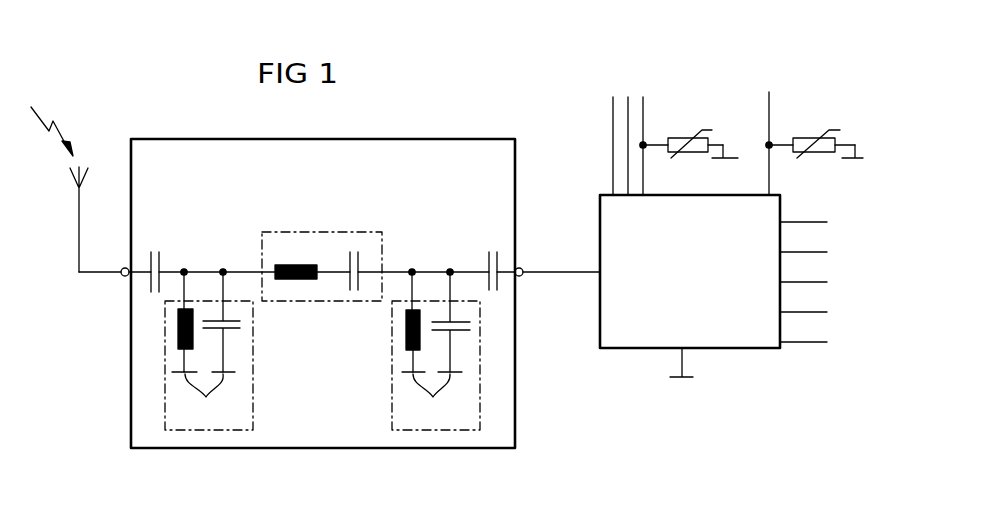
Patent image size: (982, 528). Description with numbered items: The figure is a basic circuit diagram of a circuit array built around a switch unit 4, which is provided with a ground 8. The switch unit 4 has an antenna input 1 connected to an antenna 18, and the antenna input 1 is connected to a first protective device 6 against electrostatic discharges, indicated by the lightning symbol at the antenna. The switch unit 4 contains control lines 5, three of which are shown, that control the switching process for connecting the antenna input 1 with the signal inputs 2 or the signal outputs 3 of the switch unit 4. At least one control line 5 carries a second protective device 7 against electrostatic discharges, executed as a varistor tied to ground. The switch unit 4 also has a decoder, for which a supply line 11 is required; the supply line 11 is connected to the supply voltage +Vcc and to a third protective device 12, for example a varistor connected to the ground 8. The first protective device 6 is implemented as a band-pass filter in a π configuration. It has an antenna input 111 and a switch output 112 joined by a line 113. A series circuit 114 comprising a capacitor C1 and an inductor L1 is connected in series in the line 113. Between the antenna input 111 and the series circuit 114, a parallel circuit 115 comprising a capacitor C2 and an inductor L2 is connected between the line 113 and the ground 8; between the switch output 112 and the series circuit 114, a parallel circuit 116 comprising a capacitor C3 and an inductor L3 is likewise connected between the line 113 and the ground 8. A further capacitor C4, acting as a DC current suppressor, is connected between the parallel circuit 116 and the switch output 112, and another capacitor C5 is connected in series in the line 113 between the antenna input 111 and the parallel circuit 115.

The antenna input 1 is at (591, 271).
The signal inputs 2 is at (818, 222).
The signal outputs 3 is at (818, 282).
The switch unit 4 is at (630, 349).
The control line 5 is at (643, 160).
The first protective device 6 is at (515, 399).
The second protective device 7 is at (688, 138).
The ground 8 is at (866, 124).
The supply line 11 is at (770, 178).
The third protective device 12 is at (805, 138).
The antenna 18 is at (73, 180).
The antenna input 111 is at (124, 268).
The switch output 112 is at (522, 268).
The line 113 is at (432, 269).
The series circuit 114 is at (314, 231).
The parallel circuit 115 is at (255, 398).
The parallel circuit 116 is at (391, 373).
The capacitor C1 is at (353, 251).
The capacitor C2 is at (241, 325).
The capacitor C3 is at (471, 326).
The capacitor C4 is at (489, 251).
The capacitor C5 is at (156, 250).
The inductor L1 is at (292, 264).
The inductor L2 is at (178, 331).
The inductor L3 is at (406, 330).